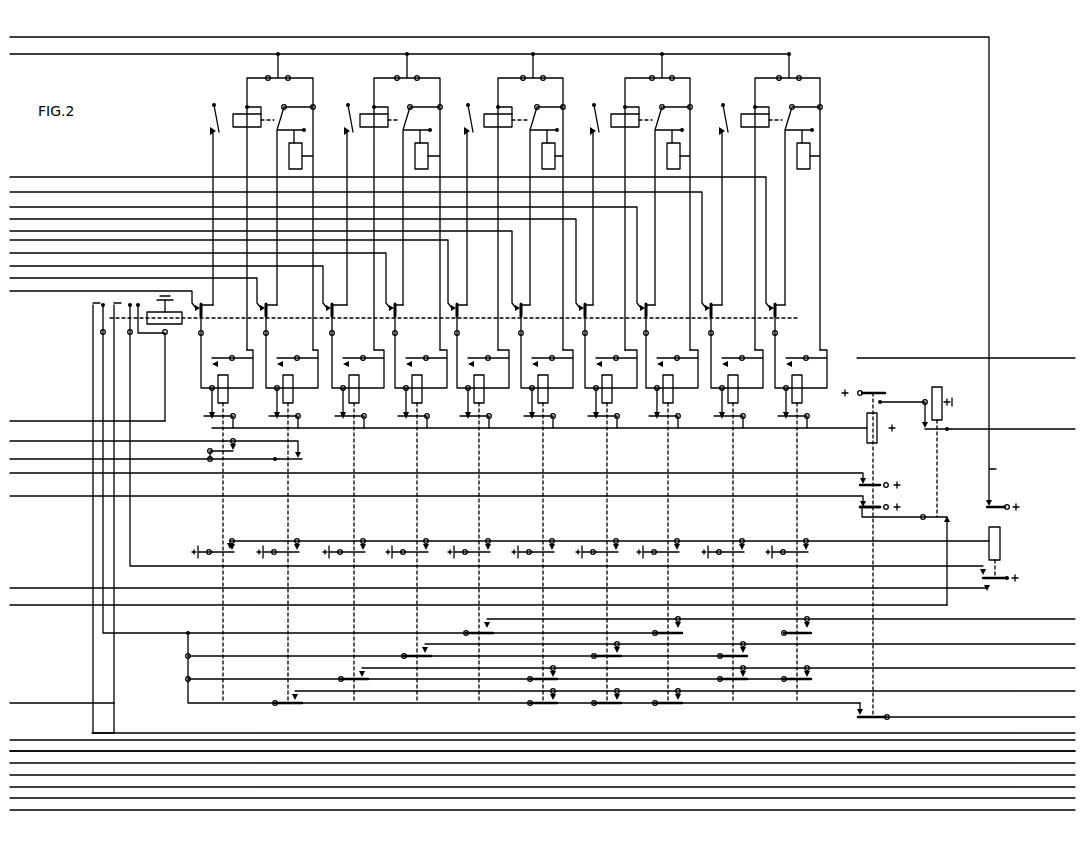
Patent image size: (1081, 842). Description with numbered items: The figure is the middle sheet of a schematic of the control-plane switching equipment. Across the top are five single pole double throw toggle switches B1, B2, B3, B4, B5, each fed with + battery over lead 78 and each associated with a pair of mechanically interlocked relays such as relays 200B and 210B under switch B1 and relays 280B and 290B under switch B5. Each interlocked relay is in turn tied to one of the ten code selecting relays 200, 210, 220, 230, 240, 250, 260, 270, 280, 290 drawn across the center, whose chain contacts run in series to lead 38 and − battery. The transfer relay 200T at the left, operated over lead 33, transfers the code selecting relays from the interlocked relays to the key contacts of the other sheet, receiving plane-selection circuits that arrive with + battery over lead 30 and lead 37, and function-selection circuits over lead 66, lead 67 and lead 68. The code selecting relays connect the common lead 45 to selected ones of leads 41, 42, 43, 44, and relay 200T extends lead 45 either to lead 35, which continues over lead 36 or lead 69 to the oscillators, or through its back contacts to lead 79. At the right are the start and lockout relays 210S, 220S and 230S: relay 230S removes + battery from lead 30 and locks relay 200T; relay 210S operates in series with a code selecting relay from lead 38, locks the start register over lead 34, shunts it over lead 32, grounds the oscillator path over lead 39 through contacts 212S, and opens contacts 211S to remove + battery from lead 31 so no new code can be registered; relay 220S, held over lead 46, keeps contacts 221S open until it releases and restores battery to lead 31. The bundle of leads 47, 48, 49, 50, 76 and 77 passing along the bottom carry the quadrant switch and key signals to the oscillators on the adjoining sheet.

The lead 30 is at (36, 28).
The lead 78 is at (36, 45).
The lead 37 is at (32, 265).
The single pole double throw toggle switch B1 is at (264, 201).
The single pole double throw toggle switch B2 is at (393, 201).
The single pole double throw toggle switch B3 is at (514, 201).
The single pole double throw toggle switch B4 is at (641, 201).
The single pole double throw toggle switch B5 is at (777, 201).
The mechanically interlocked relay 200B is at (246, 106).
The mechanically interlocked relay 210B is at (297, 155).
The mechanically interlocked relay 280B is at (756, 106).
The mechanically interlocked relay 290B is at (810, 157).
The transfer relay 200T is at (148, 309).
The code selecting relay 200 is at (133, 497).
The code selecting relay 210 is at (166, 490).
The code selecting relay 220 is at (199, 484).
The code selecting relay 230 is at (230, 478).
The code selecting relay 240 is at (261, 471).
The code selecting relay 250 is at (293, 467).
The code selecting relay 260 is at (325, 461).
The code selecting relay 270 is at (356, 455).
The code selecting relay 280 is at (388, 447).
The code selecting relay 290 is at (420, 440).
The lead 33 is at (58, 410).
The lead 68 is at (58, 430).
The lead 67 is at (58, 447).
The lead 32 is at (58, 462).
The lead 34 is at (58, 485).
The lead 66 is at (58, 577).
The lead 31 is at (58, 594).
The lead 35 is at (36, 692).
The lead 45 is at (160, 634).
The lead 44 is at (1068, 608).
The lead 43 is at (1068, 633).
The lead 42 is at (1068, 657).
The lead 41 is at (1068, 680).
The lead 39 is at (1068, 705).
The lead 38 is at (1068, 347).
The lead 46 is at (1068, 417).
The start and lockout relay 210S is at (566, 555).
The contacts of relay 210S 211S is at (858, 511).
The contacts of relay 210S 212S is at (871, 712).
The start and lockout relay 220S is at (933, 385).
The contacts of relay 220S 221S is at (945, 522).
The start and lockout relay 230S is at (1007, 526).
The lead 79 is at (113, 733).
The lead 36 is at (31, 712).
The lead 69 is at (72, 714).
The lead 50 is at (255, 751).
The lead 49 is at (223, 763).
The lead 76 is at (285, 775).
The lead 77 is at (380, 787).
The lead 48 is at (173, 798).
The lead 47 is at (135, 810).